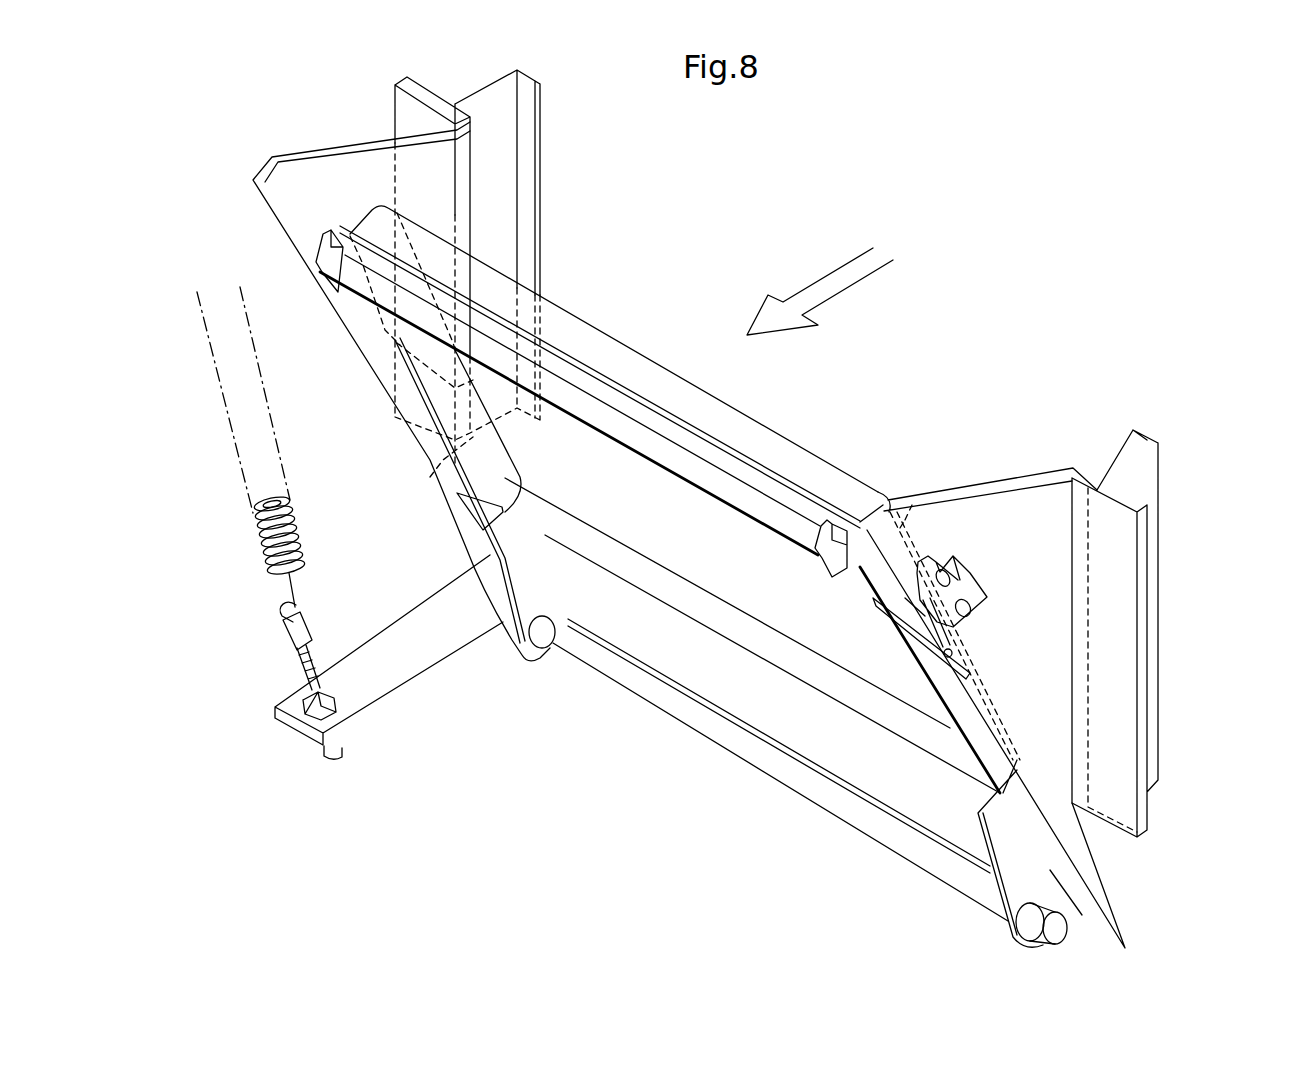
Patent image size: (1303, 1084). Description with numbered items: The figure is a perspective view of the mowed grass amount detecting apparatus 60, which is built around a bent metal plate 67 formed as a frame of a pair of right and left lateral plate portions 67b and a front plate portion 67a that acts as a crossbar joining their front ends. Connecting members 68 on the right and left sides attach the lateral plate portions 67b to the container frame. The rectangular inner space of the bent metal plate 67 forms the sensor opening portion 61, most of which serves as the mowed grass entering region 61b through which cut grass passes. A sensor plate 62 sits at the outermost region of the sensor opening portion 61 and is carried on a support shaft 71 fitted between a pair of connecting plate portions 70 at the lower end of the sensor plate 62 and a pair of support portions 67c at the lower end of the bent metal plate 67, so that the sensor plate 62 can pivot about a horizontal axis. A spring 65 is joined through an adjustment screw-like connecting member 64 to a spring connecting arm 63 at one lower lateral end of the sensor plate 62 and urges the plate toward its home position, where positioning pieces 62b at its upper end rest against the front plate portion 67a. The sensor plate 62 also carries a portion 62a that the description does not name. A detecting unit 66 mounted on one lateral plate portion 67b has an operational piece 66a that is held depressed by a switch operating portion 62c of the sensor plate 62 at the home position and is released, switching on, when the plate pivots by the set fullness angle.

The mowed grass amount detecting apparatus 60 is at (637, 575).
The sensor opening portion 61 is at (804, 243).
The mowed grass entering region 61b is at (736, 236).
The sensor plate 62 is at (613, 499).
The plate flange 62a is at (910, 540).
The positioning pieces 62b is at (317, 252).
The switch operating portion 62c is at (920, 640).
The spring connecting arm 63 is at (405, 640).
The connecting member 64 is at (295, 678).
The spring 65 is at (250, 555).
The detecting unit 66 is at (931, 606).
The operational piece 66a is at (918, 613).
The bent metal plate 67 is at (709, 516).
The front plate portion 67a is at (622, 400).
The lateral plate portions 67b is at (323, 148).
The support portions 67c is at (510, 640).
The connecting members 68 is at (495, 153).
The connecting plate portions 70 is at (550, 655).
The support shaft 71 is at (745, 745).